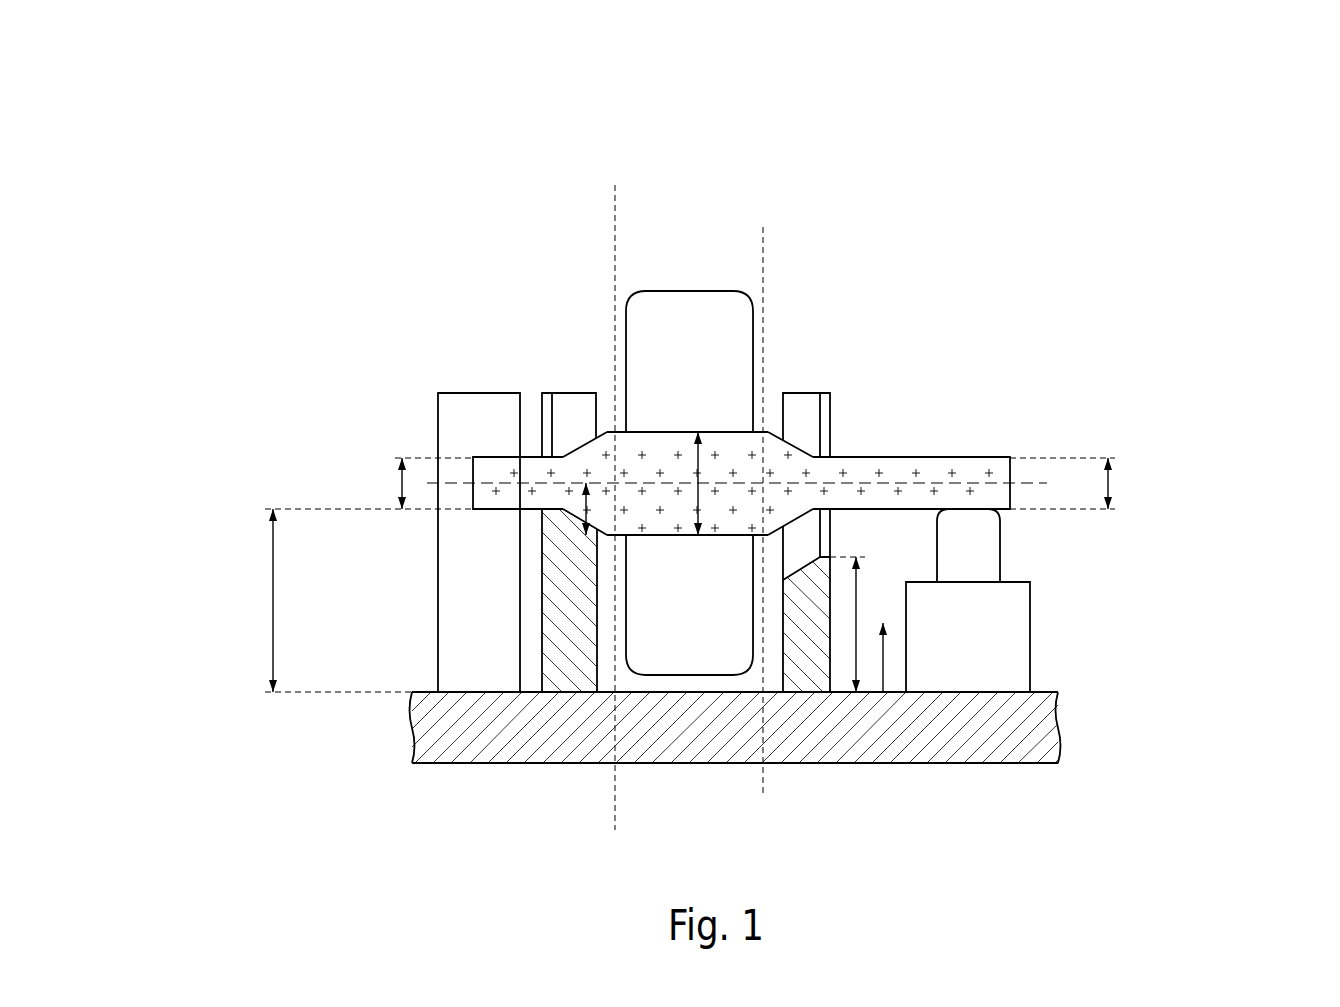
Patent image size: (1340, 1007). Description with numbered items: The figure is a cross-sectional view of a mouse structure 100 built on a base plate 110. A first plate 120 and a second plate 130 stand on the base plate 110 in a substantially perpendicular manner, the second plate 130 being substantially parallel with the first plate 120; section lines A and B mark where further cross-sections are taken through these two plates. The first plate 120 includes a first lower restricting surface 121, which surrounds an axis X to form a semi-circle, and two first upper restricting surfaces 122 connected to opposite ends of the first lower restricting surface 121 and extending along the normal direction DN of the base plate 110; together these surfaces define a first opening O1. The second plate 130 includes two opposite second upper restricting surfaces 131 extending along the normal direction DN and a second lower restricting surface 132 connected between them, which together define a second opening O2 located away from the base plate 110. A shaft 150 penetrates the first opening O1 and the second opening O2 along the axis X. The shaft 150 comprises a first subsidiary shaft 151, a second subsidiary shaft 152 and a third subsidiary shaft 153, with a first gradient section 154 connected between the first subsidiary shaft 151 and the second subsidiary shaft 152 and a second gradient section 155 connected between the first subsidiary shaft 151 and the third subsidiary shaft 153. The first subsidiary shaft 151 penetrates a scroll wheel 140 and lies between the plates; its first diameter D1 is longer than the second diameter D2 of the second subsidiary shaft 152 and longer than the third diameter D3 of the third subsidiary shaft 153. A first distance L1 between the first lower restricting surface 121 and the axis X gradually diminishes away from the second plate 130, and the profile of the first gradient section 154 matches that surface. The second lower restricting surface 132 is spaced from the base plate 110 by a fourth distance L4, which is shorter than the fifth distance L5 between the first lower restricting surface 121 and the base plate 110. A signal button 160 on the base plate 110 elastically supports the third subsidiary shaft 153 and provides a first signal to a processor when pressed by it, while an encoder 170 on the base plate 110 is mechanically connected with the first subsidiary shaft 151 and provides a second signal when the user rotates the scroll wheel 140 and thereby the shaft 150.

The mouse structure 100 is at (145, 71).
The base plate 110 is at (457, 762).
The first plate 120 is at (572, 688).
The first lower restricting surface 121 is at (597, 505).
The first upper restricting surfaces 122 is at (570, 403).
The second plate 130 is at (800, 683).
The second upper restricting surfaces 131 is at (797, 402).
The second lower restricting surface 132 is at (800, 570).
The scroll wheel 140 is at (743, 320).
The shaft 150 is at (1300, 32).
The first subsidiary shaft 151 is at (660, 445).
The second subsidiary shaft 152 is at (490, 463).
The third subsidiary shaft 153 is at (930, 462).
The first gradient section 154 is at (587, 463).
The second gradient section 155 is at (793, 467).
The signal button 160 is at (1030, 640).
The encoder 170 is at (445, 610).
The first diameter D1 is at (698, 473).
The second diameter D2 is at (369, 483).
The third diameter D3 is at (1083, 483).
The first distance L1 is at (586, 522).
The fourth distance L4 is at (856, 615).
The fifth distance L5 is at (322, 600).
The first opening O1 is at (578, 437).
The second opening O2 is at (814, 437).
The axis X is at (1032, 484).
The normal direction DN is at (883, 692).
The section line A- A is at (618, 830).
The section line B- B is at (760, 797).